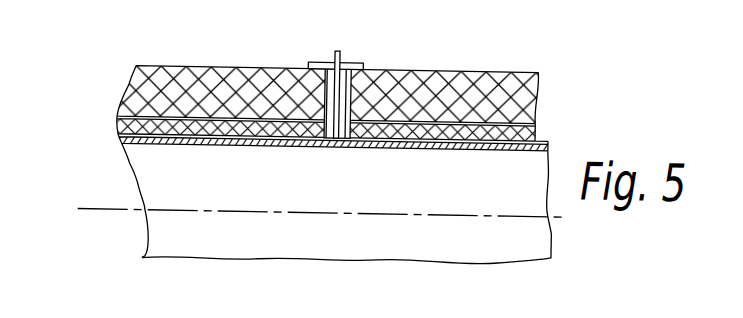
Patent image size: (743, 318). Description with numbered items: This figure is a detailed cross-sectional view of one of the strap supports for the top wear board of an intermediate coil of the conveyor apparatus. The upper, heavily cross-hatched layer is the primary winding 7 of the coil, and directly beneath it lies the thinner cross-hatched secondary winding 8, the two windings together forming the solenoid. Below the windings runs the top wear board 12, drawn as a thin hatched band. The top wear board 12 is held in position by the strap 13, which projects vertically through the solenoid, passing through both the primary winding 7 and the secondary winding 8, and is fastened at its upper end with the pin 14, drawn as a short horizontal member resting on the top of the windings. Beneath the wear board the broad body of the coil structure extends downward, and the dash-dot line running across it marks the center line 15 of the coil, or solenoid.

The primary winding 7 is at (512, 86).
The secondary winding 8 is at (535, 129).
The top wear board 12 is at (447, 146).
The strap 13 is at (316, 81).
The pin 14 is at (308, 67).
The center line 15 is at (329, 204).